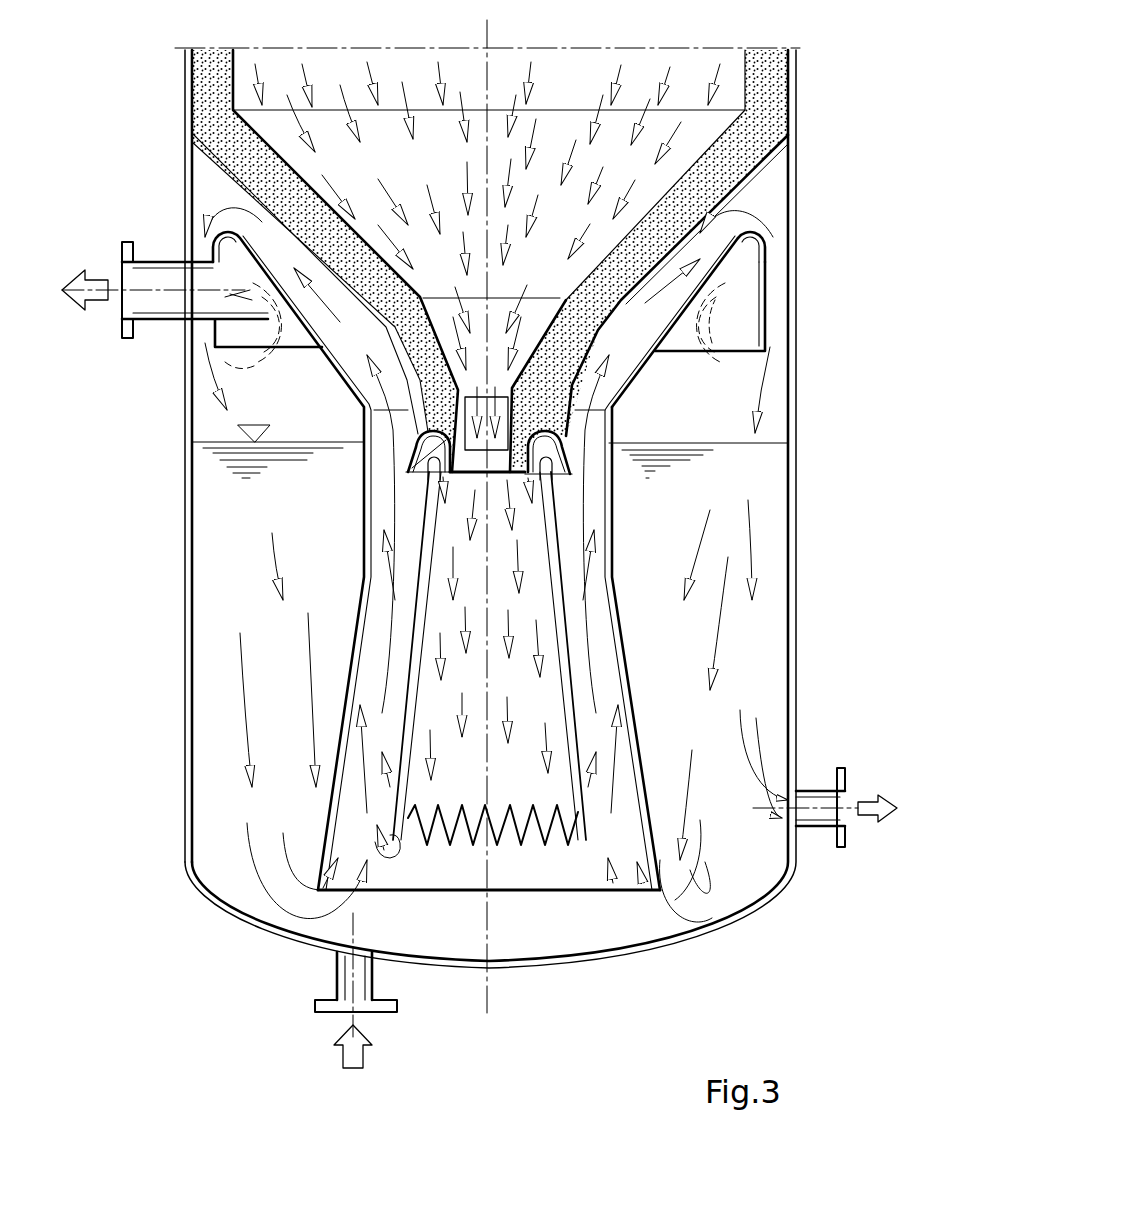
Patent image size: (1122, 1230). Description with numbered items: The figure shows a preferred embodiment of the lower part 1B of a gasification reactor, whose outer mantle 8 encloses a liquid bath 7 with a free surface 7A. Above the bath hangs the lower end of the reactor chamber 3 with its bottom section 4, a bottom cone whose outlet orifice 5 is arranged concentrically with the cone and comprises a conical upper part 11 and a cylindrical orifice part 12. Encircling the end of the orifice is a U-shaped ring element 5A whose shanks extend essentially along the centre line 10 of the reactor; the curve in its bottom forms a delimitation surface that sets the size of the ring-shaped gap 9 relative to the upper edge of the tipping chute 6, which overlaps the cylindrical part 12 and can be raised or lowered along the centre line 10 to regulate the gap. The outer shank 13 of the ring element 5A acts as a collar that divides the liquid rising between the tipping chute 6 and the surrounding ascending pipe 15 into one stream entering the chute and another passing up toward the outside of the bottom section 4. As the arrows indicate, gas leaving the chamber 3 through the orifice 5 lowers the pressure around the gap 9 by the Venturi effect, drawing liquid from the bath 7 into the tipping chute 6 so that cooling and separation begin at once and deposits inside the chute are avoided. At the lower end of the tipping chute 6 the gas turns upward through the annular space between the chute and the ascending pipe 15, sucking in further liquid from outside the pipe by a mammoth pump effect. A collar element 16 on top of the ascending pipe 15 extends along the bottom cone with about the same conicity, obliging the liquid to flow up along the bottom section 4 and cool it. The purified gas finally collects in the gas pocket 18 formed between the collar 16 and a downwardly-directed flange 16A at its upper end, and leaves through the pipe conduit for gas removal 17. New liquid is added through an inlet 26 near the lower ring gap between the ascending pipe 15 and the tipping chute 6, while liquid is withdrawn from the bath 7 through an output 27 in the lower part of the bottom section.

The lower part of the reactor 1B is at (798, 407).
The reactor chamber 3 is at (548, 132).
The bottom section 4 is at (674, 176).
The outlet orifice 5 is at (408, 429).
The U-shaped ring element 5A is at (568, 442).
The tipping chute 6 is at (578, 723).
The liquid bath 7 is at (245, 587).
The surface of the liquid bath 7A is at (243, 425).
The mantle 8 is at (188, 660).
The ring-shaped gap 9 is at (563, 497).
The centre line 10 is at (492, 993).
The conical upper part 11 is at (418, 465).
The cylindrical orifice part 12 is at (410, 473).
The outer shank 13 is at (557, 477).
The ascending pipe 15 is at (624, 629).
The collar element 16 is at (652, 367).
The downwardly-directed flange 16A is at (764, 303).
The pipe conduit for gas removal 17 is at (165, 273).
The gas pocket 18 is at (742, 257).
The inlet 26 is at (343, 982).
The output 27 is at (820, 800).